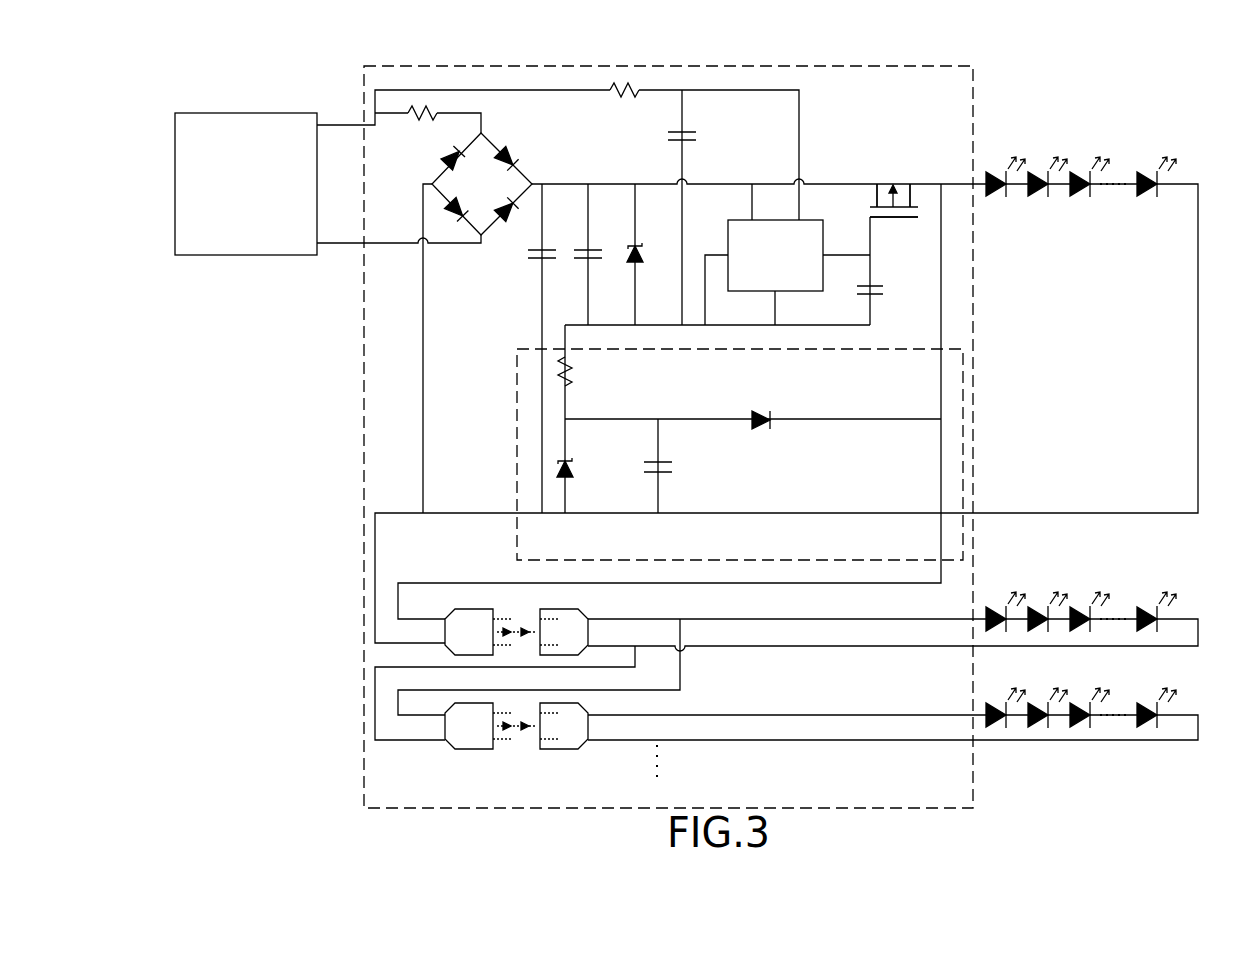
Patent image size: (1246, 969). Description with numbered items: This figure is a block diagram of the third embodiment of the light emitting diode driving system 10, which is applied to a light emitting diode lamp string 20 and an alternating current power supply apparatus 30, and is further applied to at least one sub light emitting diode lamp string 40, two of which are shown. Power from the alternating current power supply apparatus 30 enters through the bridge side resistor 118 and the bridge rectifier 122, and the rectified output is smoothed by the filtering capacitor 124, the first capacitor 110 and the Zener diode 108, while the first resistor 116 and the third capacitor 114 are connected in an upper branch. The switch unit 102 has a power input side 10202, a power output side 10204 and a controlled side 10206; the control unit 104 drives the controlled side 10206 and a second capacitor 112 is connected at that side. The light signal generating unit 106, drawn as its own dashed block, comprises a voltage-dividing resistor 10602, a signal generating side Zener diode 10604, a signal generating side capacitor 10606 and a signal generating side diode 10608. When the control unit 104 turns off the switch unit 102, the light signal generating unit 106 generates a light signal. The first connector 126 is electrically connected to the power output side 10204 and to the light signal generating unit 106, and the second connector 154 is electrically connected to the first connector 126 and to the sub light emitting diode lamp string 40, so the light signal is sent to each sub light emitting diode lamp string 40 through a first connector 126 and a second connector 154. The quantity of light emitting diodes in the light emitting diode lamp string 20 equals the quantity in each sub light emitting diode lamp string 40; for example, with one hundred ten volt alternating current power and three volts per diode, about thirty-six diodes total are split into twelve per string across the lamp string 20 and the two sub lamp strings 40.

The light emitting diode driving system 10 is at (364, 762).
The light emitting diode lamp string 20 is at (1078, 160).
The alternating current power supply apparatus 30 is at (243, 117).
The sub light emitting diode lamp string 40 is at (1078, 597).
The switch unit 102 is at (898, 180).
The power input side 10202 is at (870, 183).
The power output side 10204 is at (916, 183).
The controlled side 10206 is at (875, 228).
The control unit 104 is at (743, 224).
The light signal generating unit 106 is at (520, 453).
The voltage-dividing resistor 10602 is at (574, 375).
The signal generating side Zener diode 10604 is at (572, 470).
The signal generating side capacitor 10606 is at (667, 465).
The signal generating side diode 10608 is at (765, 410).
The Zener diode 108 is at (642, 254).
The first capacitor 110 is at (594, 252).
The second capacitor 112 is at (884, 293).
The third capacitor 114 is at (693, 112).
The first resistor 116 is at (620, 100).
The bridge side resistor 118 is at (418, 120).
The bridge rectifier 122 is at (522, 150).
The filtering capacitor 124 is at (548, 252).
The first connector 126 is at (470, 614).
The second connector 154 is at (560, 614).